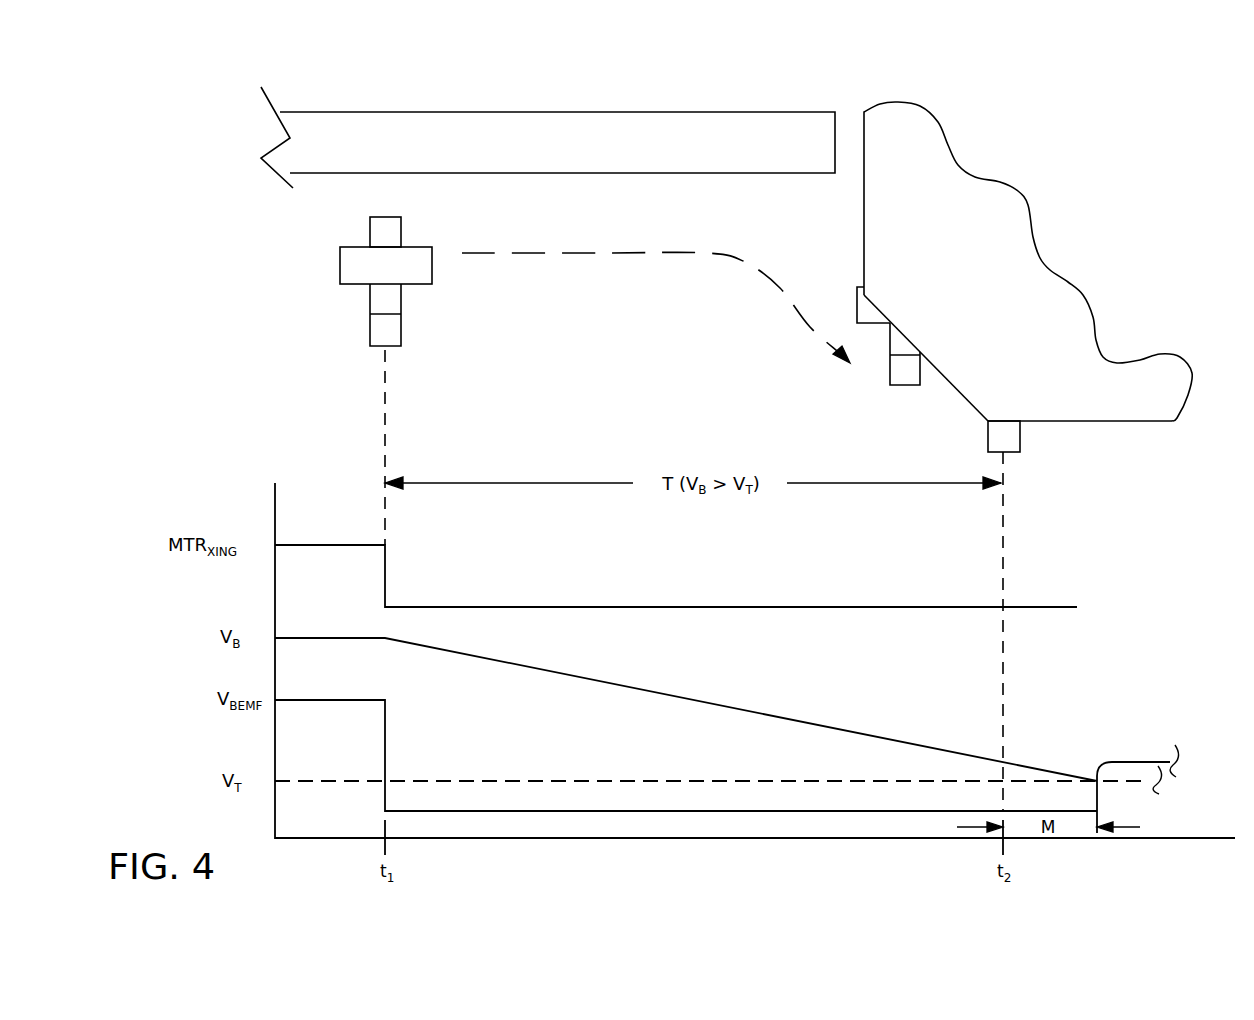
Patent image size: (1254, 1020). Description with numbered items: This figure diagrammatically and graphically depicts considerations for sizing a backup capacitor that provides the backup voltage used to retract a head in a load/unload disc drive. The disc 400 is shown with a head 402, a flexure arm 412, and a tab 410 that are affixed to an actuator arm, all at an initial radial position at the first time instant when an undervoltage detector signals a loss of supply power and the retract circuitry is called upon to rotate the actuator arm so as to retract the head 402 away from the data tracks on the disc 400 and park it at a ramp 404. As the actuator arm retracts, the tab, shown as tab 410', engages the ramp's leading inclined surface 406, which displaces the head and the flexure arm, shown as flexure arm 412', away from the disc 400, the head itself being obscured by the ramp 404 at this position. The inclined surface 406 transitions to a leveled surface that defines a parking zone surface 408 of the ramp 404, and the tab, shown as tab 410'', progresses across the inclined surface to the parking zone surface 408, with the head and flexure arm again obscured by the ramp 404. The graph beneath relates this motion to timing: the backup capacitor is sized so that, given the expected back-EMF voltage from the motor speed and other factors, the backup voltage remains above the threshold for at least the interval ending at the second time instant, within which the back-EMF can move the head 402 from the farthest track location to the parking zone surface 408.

The disc 400 is at (570, 112).
The head 402 is at (370, 232).
The ramp 404 is at (1003, 208).
The leading inclined surface 406 is at (960, 395).
The parking zone surface 408 is at (1120, 421).
The tab 410 is at (334, 315).
The tab 410' is at (869, 368).
The tab 410'' is at (1052, 460).
The flexure arm 412 is at (334, 260).
The flexure arm 412' is at (838, 277).